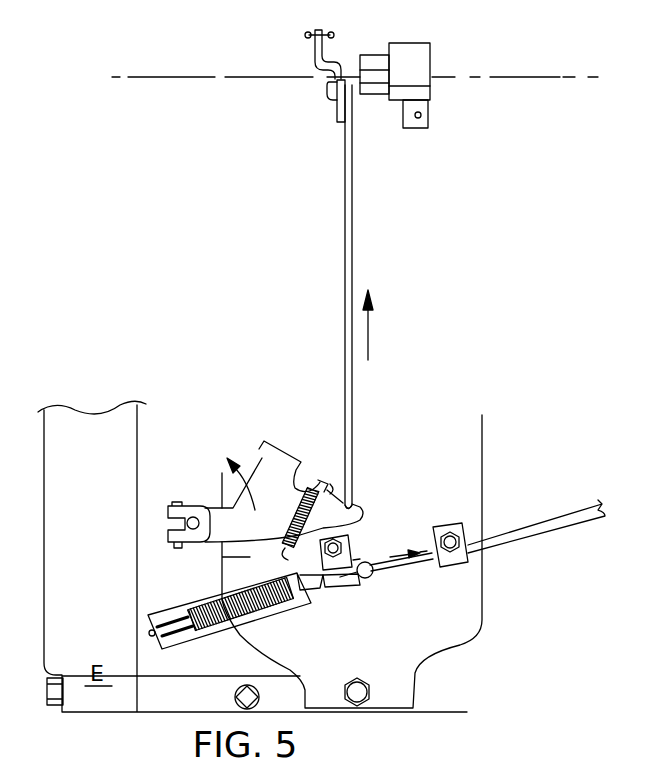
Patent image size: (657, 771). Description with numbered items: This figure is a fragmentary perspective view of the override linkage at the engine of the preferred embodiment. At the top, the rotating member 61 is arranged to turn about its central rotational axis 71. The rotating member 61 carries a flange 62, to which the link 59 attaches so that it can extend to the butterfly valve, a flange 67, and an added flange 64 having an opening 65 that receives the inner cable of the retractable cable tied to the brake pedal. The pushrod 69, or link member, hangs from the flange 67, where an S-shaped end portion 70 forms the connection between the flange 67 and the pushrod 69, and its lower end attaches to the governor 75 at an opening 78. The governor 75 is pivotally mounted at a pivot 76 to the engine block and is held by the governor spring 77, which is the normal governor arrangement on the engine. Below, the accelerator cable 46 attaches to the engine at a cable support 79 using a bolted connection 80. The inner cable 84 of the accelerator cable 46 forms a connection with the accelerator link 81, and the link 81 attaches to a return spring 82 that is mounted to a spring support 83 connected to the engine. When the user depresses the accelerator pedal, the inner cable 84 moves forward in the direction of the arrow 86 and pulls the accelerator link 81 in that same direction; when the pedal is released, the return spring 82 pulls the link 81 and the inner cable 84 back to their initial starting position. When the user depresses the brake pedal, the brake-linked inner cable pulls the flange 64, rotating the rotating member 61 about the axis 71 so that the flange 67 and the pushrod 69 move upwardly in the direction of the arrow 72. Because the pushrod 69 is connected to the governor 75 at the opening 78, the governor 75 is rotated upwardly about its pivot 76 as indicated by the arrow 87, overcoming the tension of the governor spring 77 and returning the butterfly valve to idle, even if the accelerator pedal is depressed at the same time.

The accelerator cable 46 is at (580, 528).
The link 59 is at (334, 34).
The rotating member 61 is at (415, 58).
The flange 62 is at (314, 63).
The flange 64 is at (430, 107).
The opening 65 is at (421, 118).
The flange 67 is at (338, 110).
The pushrod 69 is at (345, 207).
The S-shaped end portion 70 is at (326, 93).
The central rotational axis 71 is at (563, 77).
The arrow 72 is at (370, 331).
The governor 75 is at (228, 507).
The pivot 76 is at (170, 532).
The governor spring 77 is at (298, 528).
The opening 78 is at (355, 509).
The cable support 79 is at (465, 570).
The bolted connection 80 is at (465, 524).
The accelerator link 81 is at (349, 600).
The return spring 82 is at (258, 612).
The spring support 83 is at (206, 596).
The inner cable 84 is at (405, 561).
The arrow 86 is at (392, 554).
The arrow 87 is at (255, 510).